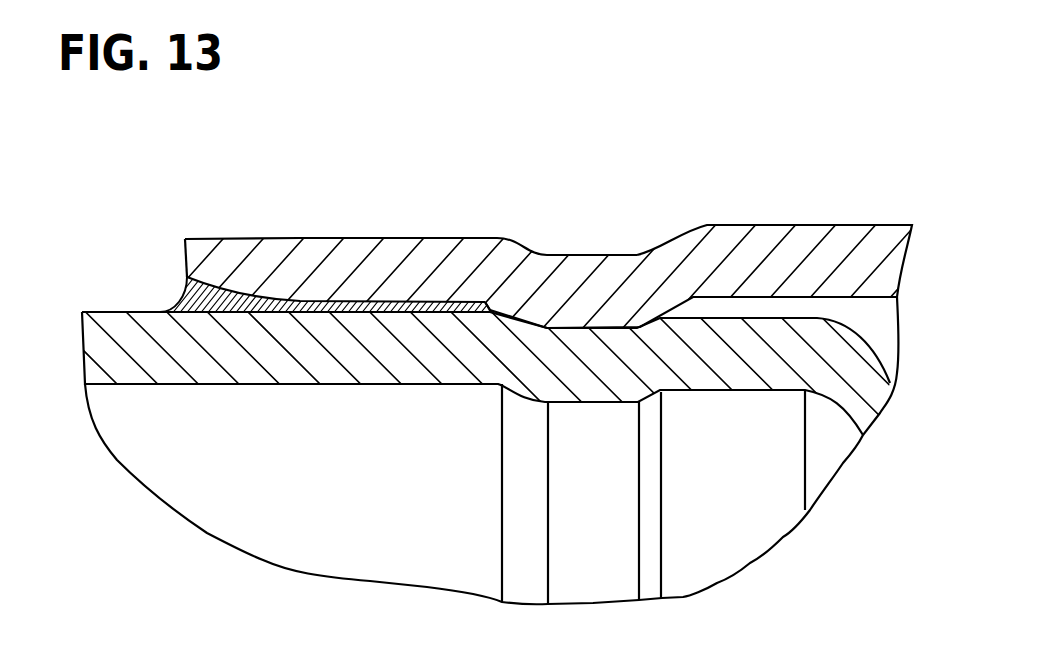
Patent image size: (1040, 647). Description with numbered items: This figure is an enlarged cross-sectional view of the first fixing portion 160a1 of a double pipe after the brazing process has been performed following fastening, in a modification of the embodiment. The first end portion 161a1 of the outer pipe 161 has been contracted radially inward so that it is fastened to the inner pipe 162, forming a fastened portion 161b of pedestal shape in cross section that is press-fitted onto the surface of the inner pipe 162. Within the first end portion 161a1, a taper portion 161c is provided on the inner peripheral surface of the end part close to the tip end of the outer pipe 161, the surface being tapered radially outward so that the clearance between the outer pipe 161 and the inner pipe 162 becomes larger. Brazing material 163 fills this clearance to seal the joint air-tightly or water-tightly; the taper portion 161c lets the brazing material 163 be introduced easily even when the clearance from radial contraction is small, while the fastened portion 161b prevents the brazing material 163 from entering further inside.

The first fixing portion 160a1 is at (378, 228).
The outer pipe 161 is at (813, 242).
The first end portion 161a1 is at (307, 257).
The fastened portion 161b is at (593, 255).
The taper portion 161c is at (230, 295).
The inner pipe 162 is at (127, 332).
The brazing material 163 is at (182, 290).